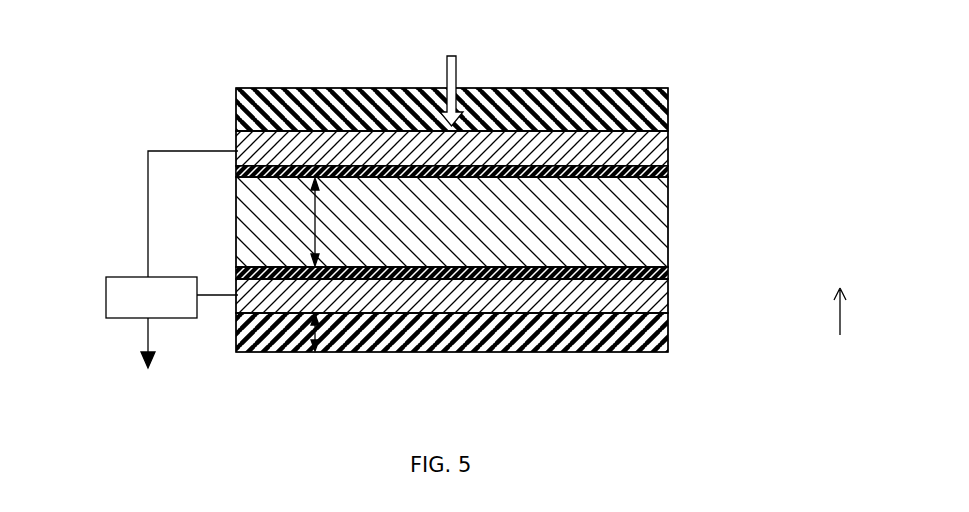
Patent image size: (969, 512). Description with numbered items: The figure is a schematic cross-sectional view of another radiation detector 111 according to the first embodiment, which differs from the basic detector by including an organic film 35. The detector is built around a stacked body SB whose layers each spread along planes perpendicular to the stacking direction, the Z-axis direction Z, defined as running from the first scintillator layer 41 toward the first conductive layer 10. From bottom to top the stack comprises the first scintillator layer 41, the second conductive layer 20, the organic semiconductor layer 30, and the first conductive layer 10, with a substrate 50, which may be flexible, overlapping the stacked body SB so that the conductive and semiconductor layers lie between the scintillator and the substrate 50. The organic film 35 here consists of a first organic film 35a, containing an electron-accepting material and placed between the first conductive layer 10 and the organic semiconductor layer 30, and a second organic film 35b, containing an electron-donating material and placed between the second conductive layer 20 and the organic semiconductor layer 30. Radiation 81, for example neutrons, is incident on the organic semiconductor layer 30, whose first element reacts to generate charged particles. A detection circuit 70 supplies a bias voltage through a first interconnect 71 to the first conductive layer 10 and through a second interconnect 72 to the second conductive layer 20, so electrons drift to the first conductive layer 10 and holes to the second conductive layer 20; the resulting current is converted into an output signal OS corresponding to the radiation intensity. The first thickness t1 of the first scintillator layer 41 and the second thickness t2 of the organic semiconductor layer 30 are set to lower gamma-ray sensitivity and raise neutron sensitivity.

The radiation detector 111 is at (772, 113).
The substrate 50 is at (645, 121).
The first conductive layer 10 is at (640, 157).
The first organic film 35a is at (645, 172).
The organic film 35 is at (492, 223).
The organic semiconductor layer 30 is at (645, 222).
The second organic film 35b is at (645, 273).
The second conductive layer 20 is at (645, 300).
The first scintillator layer 41 is at (645, 336).
The stacked body SB is at (757, 137).
The radiation 81 is at (456, 75).
The detection circuit 70 is at (127, 277).
The first interconnect 71 is at (148, 172).
The second interconnect 72 is at (213, 297).
The output signal OS is at (146, 338).
The first thickness t1 is at (315, 333).
The second thickness t2 is at (310, 218).
The Z-axis direction Z is at (840, 298).